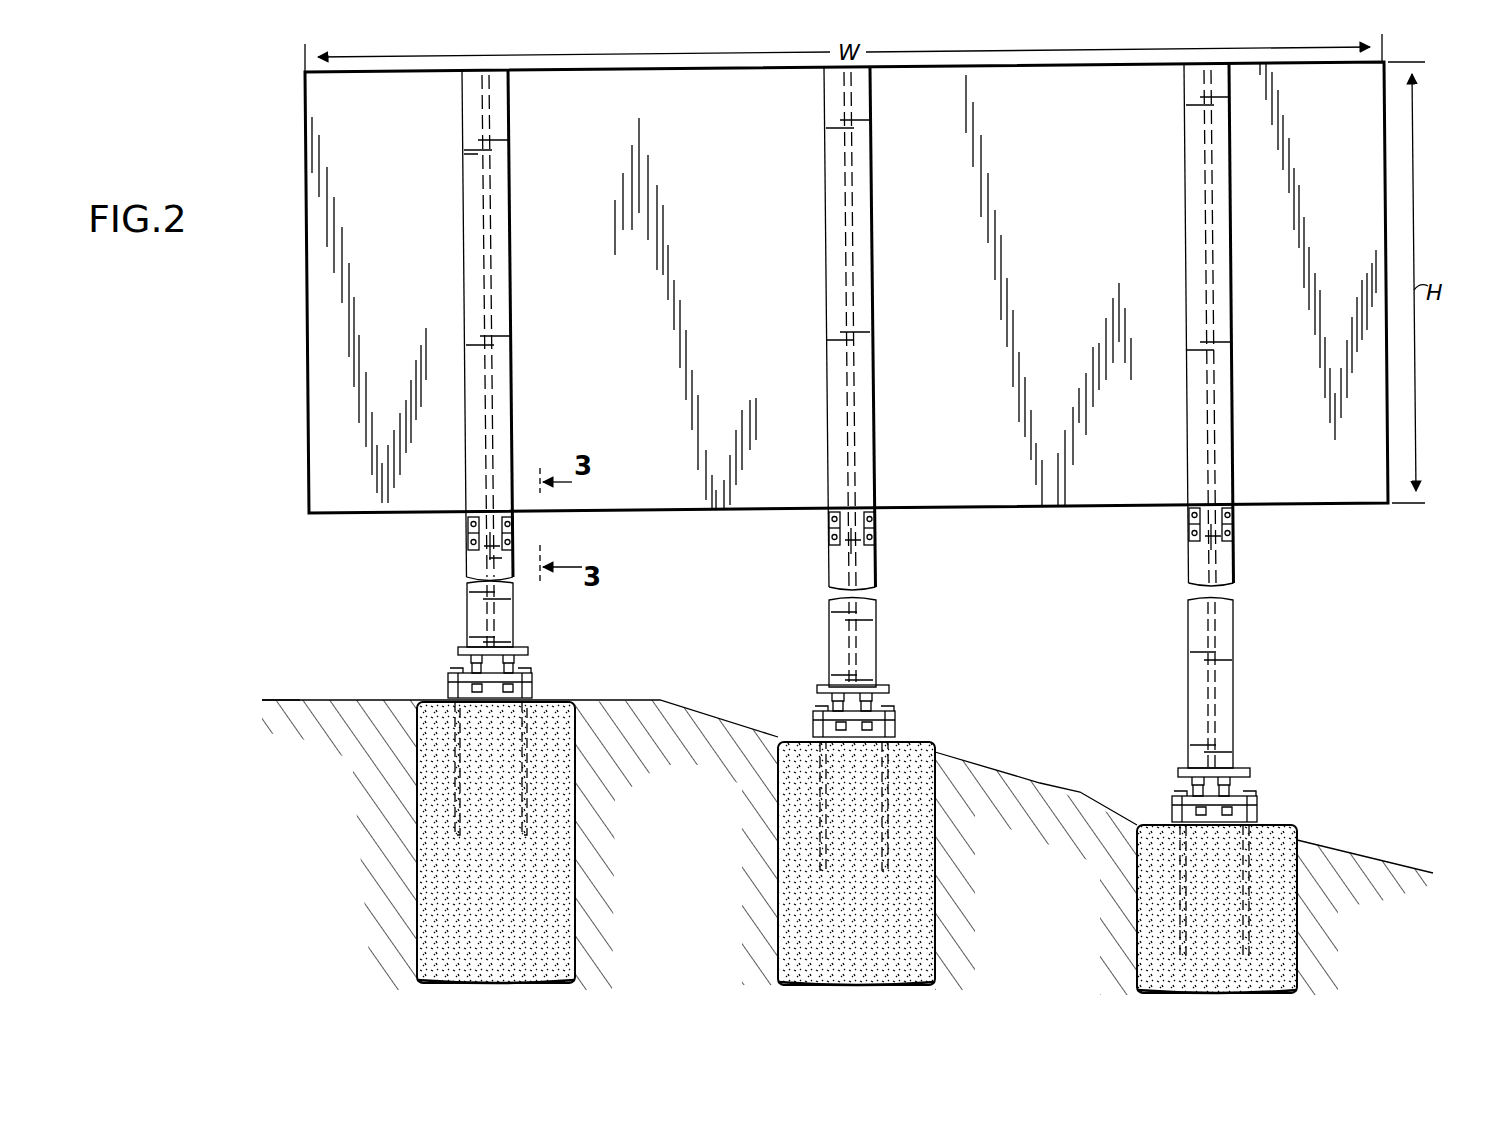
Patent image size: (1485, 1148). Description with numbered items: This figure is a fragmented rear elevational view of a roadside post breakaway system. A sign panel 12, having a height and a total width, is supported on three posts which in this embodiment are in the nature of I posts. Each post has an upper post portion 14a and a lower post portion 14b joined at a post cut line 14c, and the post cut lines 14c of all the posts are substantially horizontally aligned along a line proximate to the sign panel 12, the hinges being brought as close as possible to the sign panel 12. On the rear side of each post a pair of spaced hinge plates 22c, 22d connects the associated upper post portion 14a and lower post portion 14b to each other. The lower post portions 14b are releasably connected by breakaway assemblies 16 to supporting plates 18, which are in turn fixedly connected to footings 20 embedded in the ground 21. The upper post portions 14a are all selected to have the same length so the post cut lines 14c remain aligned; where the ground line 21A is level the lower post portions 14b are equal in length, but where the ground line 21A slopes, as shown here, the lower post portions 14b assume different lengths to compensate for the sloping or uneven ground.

The sign panel 12 is at (308, 330).
The upper post portion 14a is at (513, 331).
The lower post portion 14b is at (467, 600).
The post cut line 14c is at (500, 533).
The breakaway assembly 16 is at (454, 662).
The supporting plate 18 is at (533, 686).
The footing 20 is at (426, 800).
The ground 21 is at (642, 816).
The ground line 21A is at (303, 663).
The hinge plate 22c is at (466, 523).
The hinge plate 22d is at (516, 522).